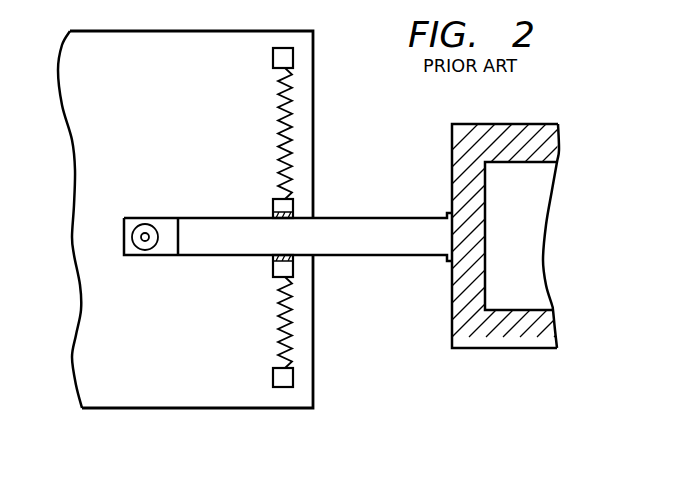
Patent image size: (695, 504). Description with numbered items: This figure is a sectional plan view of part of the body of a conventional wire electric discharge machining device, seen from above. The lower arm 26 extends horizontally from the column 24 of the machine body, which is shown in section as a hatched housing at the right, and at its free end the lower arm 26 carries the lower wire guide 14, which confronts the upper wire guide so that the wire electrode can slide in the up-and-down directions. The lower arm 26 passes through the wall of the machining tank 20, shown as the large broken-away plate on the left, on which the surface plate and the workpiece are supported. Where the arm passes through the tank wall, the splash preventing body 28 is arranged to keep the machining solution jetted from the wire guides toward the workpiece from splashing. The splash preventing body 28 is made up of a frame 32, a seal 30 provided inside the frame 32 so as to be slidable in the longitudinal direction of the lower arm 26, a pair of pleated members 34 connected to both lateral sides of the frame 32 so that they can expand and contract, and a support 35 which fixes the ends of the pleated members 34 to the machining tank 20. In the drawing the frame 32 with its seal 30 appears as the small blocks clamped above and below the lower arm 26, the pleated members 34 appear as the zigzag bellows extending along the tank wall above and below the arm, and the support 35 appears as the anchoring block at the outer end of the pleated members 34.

The lower wire guide 14 is at (149, 256).
The machining tank 20 is at (182, 408).
The column 24 is at (507, 348).
The lower arm 26 is at (370, 255).
The splash preventing body 28 is at (287, 387).
The seal 30 is at (293, 214).
The frame 32 is at (293, 204).
The pleated members 34 is at (289, 116).
The support 35 is at (293, 60).